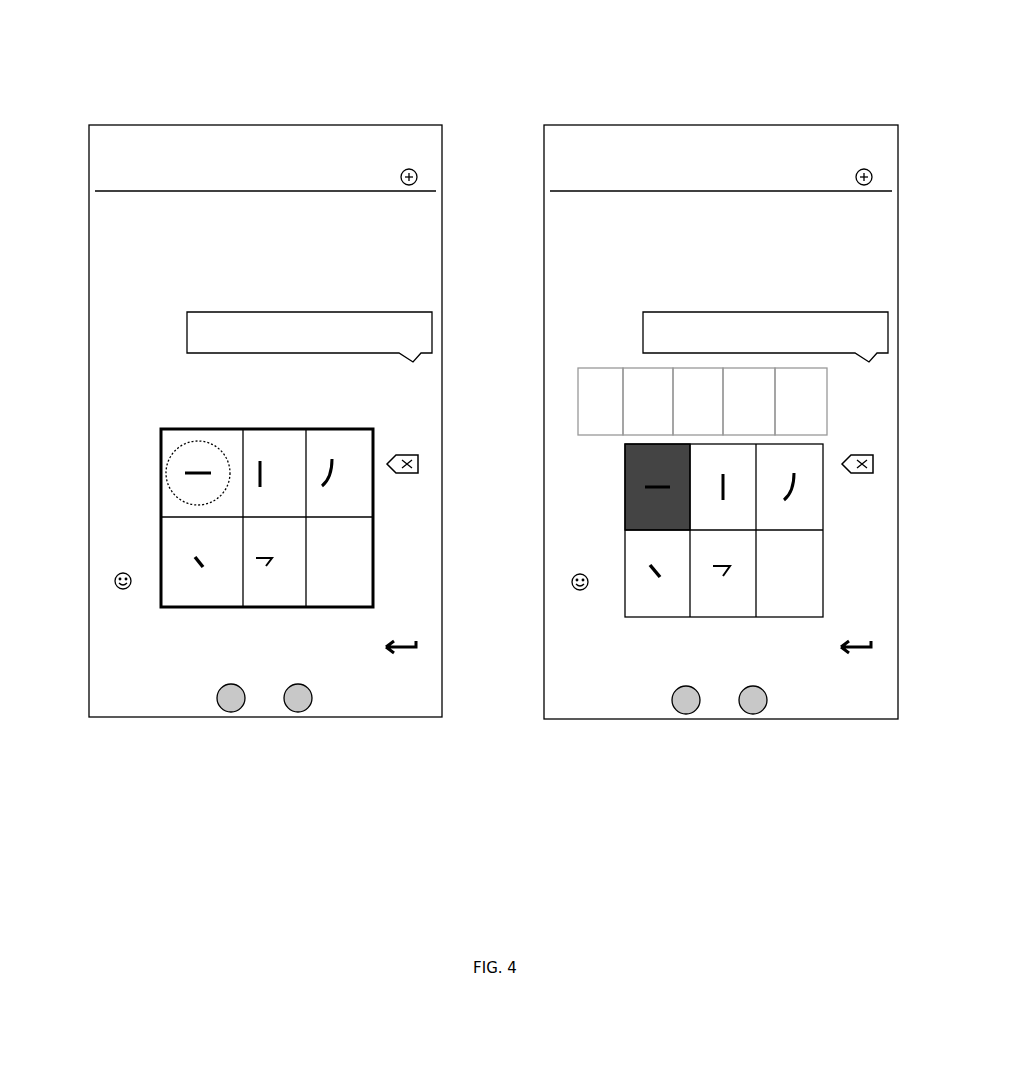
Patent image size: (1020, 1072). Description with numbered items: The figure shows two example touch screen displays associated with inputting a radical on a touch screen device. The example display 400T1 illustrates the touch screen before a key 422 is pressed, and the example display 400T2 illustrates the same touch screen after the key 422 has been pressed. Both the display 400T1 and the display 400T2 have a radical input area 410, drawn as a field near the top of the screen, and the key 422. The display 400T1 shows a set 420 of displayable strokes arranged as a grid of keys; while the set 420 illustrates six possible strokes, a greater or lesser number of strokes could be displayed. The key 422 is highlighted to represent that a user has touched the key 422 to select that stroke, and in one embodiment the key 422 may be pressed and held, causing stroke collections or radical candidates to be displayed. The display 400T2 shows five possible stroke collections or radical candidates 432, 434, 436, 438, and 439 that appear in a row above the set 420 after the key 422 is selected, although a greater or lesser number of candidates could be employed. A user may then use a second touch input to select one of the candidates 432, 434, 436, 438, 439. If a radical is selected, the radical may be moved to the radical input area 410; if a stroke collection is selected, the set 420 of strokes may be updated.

The example display 400T1 is at (285, 124).
The example display 400T2 is at (710, 124).
The radical input area 410 is at (300, 310).
The set of displayable strokes 420 is at (160, 548).
The key 422 is at (165, 443).
The radical candidate 432 is at (683, 371).
The radical candidate 434 is at (618, 371).
The radical candidate 436 is at (563, 371).
The radical candidate 438 is at (762, 391).
The radical candidate 439 is at (817, 409).